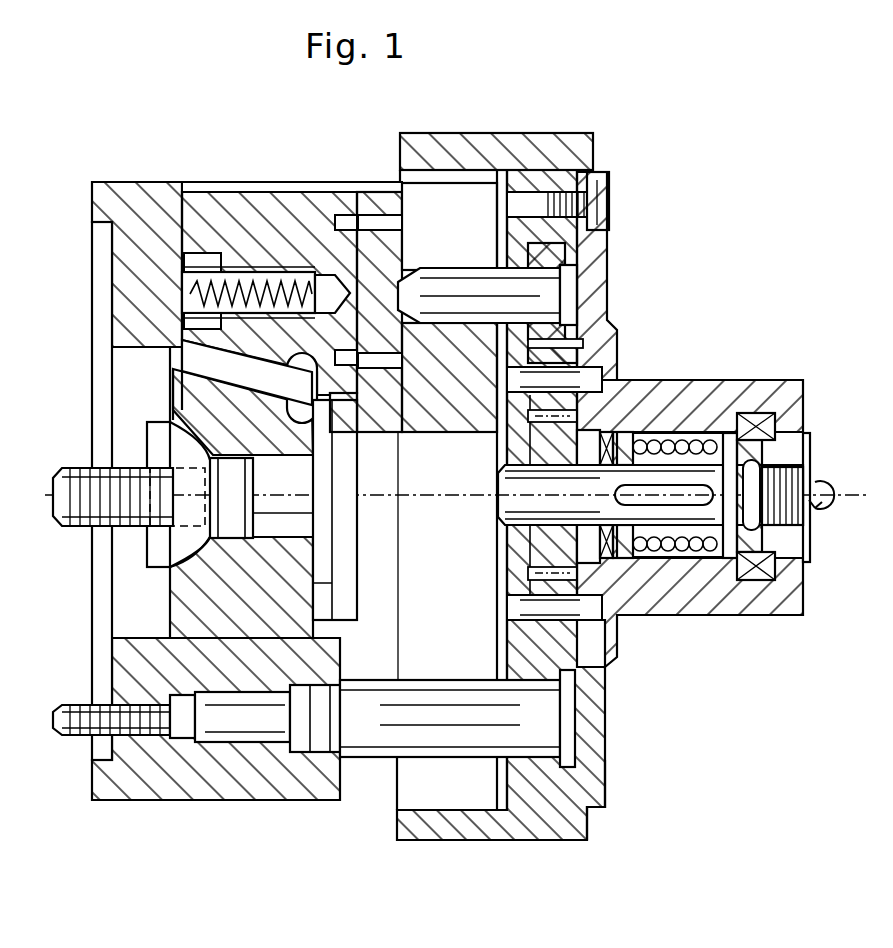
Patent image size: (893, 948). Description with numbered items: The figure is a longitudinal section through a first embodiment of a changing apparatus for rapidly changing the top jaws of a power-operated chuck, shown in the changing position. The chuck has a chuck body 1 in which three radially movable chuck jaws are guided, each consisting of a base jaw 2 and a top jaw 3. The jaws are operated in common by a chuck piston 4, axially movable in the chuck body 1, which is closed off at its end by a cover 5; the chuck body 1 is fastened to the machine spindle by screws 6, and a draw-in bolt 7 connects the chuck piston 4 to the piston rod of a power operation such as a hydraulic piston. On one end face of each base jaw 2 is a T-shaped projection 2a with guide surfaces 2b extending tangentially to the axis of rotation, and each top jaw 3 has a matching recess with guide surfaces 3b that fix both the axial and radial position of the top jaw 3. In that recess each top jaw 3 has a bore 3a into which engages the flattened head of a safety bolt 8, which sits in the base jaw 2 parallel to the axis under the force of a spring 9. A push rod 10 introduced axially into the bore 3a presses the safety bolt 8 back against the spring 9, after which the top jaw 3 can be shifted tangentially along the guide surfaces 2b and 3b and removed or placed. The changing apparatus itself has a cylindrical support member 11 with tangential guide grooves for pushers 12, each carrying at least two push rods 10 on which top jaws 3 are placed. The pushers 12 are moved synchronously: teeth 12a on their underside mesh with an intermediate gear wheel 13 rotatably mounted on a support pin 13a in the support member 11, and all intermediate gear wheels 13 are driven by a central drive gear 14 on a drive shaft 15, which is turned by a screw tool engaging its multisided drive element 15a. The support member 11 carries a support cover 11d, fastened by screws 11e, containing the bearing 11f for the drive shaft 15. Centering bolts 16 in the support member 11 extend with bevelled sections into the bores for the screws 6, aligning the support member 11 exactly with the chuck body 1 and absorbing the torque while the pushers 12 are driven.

The chuck body 1 is at (227, 775).
The base jaw 2 is at (294, 205).
The T-shaped projection 2a is at (345, 240).
The guide surfaces 2b is at (378, 213).
The top jaw 3 is at (455, 247).
The bore 3a is at (575, 285).
The guide surfaces 3b is at (362, 225).
The chuck piston 4 is at (248, 622).
The cover 5 is at (340, 583).
The screws 6 is at (152, 722).
The draw-in bolt 7 is at (330, 513).
The safety bolt 8 is at (194, 285).
The spring 9 is at (183, 212).
The push rod 10 is at (580, 303).
The cylindrical support member 11 is at (543, 810).
The support cover 11d is at (588, 790).
The screws 11e is at (598, 206).
The bearing 11f is at (753, 580).
The pusher 12 is at (586, 256).
The teeth 12a is at (583, 346).
The intermediate gear wheel 13 is at (704, 381).
The support pin 13a is at (592, 382).
The central drive gear 14 is at (590, 567).
The drive shaft 15 is at (636, 515).
The multisided drive element 15a is at (803, 570).
The centering bolt 16 is at (407, 727).